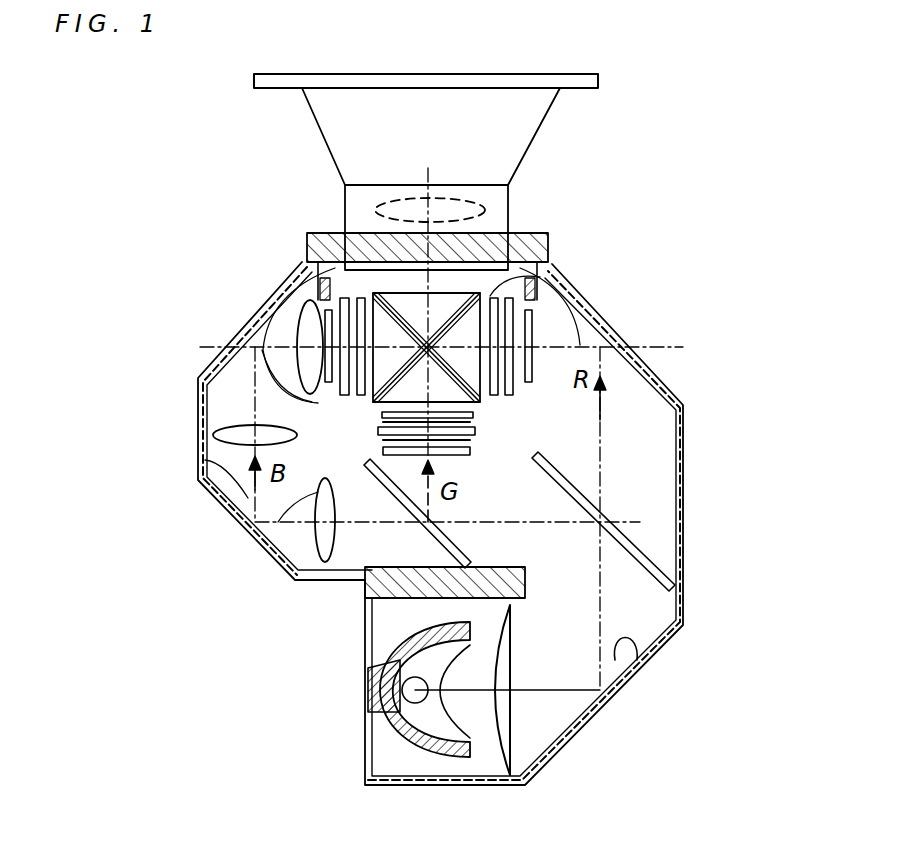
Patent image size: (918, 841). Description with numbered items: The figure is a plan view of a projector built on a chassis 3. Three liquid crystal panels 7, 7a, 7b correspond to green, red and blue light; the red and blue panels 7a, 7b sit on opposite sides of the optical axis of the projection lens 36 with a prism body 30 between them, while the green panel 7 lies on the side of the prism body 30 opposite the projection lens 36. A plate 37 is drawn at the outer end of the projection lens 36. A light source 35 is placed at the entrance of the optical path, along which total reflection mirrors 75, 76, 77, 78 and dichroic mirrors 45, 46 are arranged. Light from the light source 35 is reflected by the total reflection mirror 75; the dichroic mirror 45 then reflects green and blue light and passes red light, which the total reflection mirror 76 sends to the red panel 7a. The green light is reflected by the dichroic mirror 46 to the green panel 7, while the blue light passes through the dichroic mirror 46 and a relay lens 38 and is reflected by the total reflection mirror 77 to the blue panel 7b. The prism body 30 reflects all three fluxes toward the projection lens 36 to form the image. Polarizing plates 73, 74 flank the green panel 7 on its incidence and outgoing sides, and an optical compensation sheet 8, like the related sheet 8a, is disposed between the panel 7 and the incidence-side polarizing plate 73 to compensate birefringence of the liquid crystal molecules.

The chassis 3 is at (652, 492).
The liquid crystal panel 7 is at (590, 437).
The liquid crystal panel 7a is at (565, 262).
The liquid crystal panel 7b is at (310, 275).
The optical compensation sheet 8 is at (475, 441).
The optical compensation sheet 8a is at (478, 432).
The prism body 30 is at (405, 300).
The light source 35 is at (388, 665).
The projection lens 36 is at (510, 185).
The screen plate 37 is at (565, 73).
The relay lens 38 is at (242, 432).
The dichroic mirror 45 is at (655, 556).
The dichroic mirror 46 is at (465, 556).
The polarizing plate 73 is at (285, 335).
The polarizing plate 74 is at (497, 296).
The total reflection mirror 75 is at (640, 648).
The total reflection mirror 76 is at (630, 366).
The total reflection mirror 77 is at (218, 505).
The total reflection mirror 78 is at (215, 375).